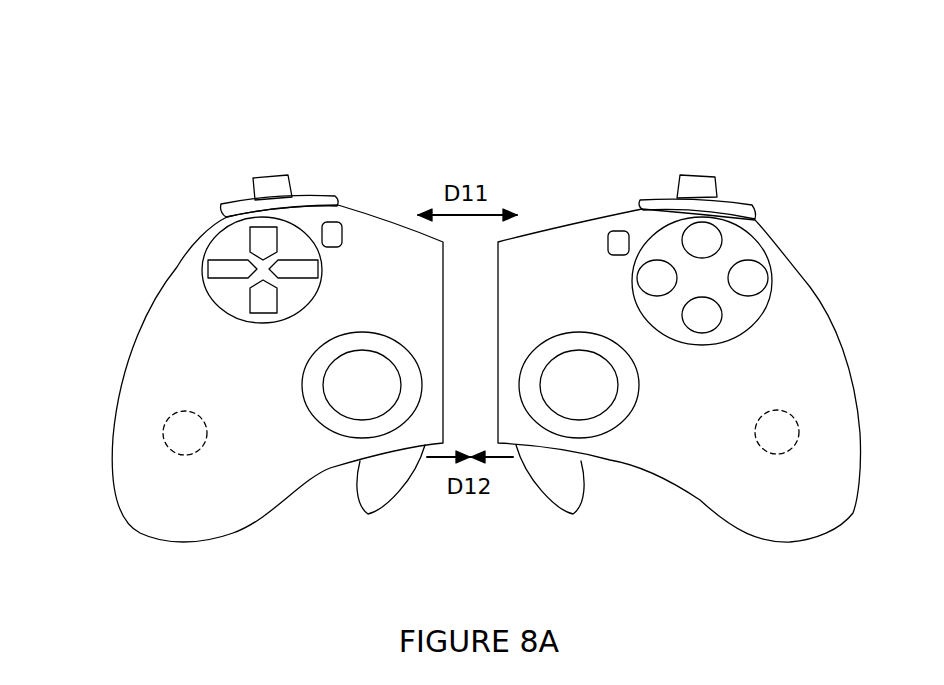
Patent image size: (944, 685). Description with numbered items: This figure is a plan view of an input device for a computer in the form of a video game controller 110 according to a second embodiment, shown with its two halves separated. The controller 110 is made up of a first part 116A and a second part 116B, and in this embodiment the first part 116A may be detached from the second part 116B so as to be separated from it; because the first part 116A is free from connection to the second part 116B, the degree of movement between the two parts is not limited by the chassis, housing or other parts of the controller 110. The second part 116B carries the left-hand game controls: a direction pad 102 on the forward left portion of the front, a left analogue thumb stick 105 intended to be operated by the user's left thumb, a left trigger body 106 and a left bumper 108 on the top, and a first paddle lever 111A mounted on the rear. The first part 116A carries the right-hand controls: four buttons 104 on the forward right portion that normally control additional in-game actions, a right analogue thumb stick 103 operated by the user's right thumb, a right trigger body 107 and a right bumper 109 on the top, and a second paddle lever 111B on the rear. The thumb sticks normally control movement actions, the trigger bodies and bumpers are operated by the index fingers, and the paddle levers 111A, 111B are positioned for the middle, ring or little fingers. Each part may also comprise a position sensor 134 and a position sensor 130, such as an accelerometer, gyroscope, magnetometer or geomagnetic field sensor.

The controller 110 is at (178, 53).
The second part 116B is at (191, 372).
The first part 116A is at (748, 383).
The direction pad 102 is at (202, 267).
The four buttons 104 is at (747, 268).
The left analogue thumb stick 105 is at (350, 407).
The right analogue thumb stick 103 is at (597, 387).
The left trigger body 106 is at (270, 180).
The right trigger body 107 is at (700, 180).
The left bumper 108 is at (222, 203).
The right bumper 109 is at (652, 200).
The first paddle lever 111A is at (385, 480).
The second paddle lever 111B is at (562, 480).
The position sensor 130 is at (782, 433).
The position sensor 134 is at (180, 432).